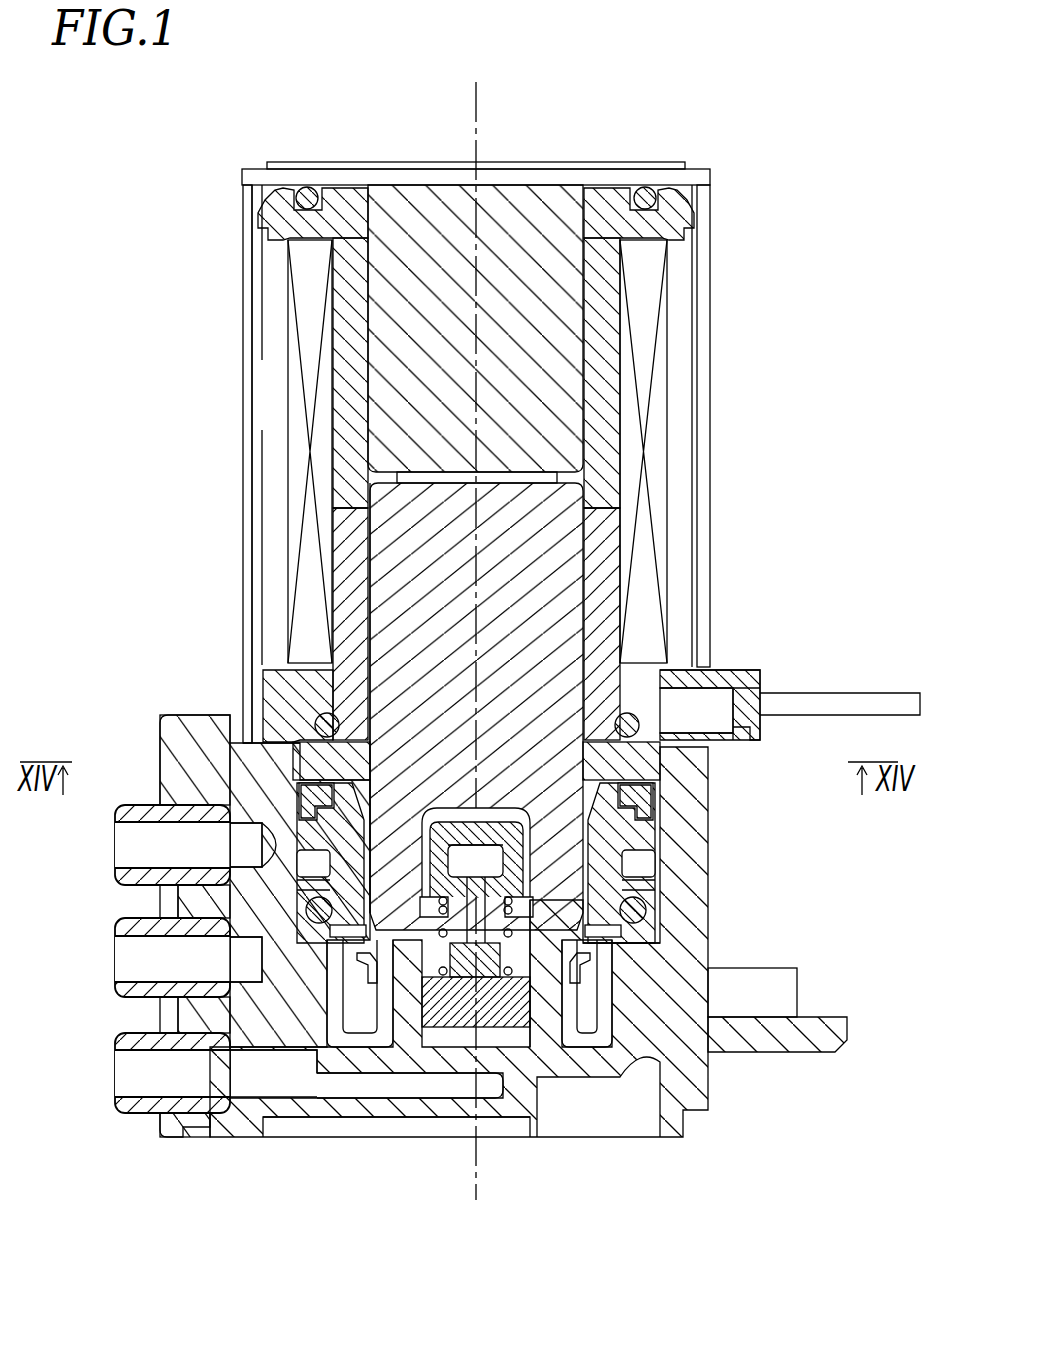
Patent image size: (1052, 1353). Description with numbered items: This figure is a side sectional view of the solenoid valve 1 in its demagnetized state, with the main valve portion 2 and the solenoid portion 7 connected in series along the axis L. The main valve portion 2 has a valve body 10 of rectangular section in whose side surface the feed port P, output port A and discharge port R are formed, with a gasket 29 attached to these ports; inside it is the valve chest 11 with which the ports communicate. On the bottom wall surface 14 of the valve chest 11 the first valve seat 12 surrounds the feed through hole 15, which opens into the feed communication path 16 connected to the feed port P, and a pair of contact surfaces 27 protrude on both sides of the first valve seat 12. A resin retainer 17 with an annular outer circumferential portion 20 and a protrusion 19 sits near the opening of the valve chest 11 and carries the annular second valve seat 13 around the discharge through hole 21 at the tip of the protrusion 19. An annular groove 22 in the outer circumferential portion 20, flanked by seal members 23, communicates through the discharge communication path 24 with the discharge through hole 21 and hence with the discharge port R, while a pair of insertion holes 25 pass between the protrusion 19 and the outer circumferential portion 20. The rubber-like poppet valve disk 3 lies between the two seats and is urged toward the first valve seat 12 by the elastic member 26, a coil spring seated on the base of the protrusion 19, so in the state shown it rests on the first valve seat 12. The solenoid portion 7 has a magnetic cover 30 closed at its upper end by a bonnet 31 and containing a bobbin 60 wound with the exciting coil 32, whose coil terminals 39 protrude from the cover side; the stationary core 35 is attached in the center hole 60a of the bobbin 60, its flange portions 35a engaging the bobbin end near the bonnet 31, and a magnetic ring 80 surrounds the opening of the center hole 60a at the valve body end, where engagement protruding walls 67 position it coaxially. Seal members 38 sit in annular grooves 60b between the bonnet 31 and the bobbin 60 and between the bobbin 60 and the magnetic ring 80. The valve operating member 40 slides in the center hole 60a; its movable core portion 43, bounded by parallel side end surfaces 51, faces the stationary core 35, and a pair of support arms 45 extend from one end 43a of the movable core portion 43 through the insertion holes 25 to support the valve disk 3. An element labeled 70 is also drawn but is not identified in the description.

The solenoid valve 1 is at (800, 102).
The main valve portion 2 is at (852, 945).
The valve disk 3 is at (550, 1050).
The solenoid portion 7 is at (775, 327).
The valve body 10 is at (812, 880).
The valve chest 11 is at (602, 1012).
The first valve seat 12 is at (520, 1030).
The second valve seat 13 is at (590, 944).
The bottom wall surface 14 is at (592, 1050).
The feed through hole 15 is at (447, 975).
The feed communication path 16 is at (340, 1070).
The retainer 17 is at (648, 806).
The protrusion 19 is at (660, 862).
The annular outer circumferential portion 20 is at (265, 812).
The discharge through hole 21 is at (452, 962).
The annular groove 22 is at (330, 870).
The seal members 23 is at (300, 800).
The discharge communication path 24 is at (445, 856).
The insertion holes 25 is at (392, 850).
The elastic member 26 is at (317, 1085).
The contact surfaces 27 is at (372, 1040).
The gasket 29 is at (138, 1105).
The magnetic cover 30 is at (702, 238).
The bonnet 31 is at (547, 168).
The exciting coil 32 is at (290, 396).
The stationary core 35 is at (416, 334).
The flange portions 35a is at (607, 205).
The seal members 38 is at (318, 196).
The coil terminals 39 is at (860, 700).
The valve operating member 40 is at (442, 558).
The movable core portion 43 is at (362, 572).
The one end 43a is at (509, 812).
The support arms 45 is at (330, 931).
The side end surfaces 51 is at (365, 520).
The bobbin 60 is at (328, 298).
The center hole 60a is at (378, 252).
The annular grooves 60b is at (306, 186).
The engagement protruding walls 67 is at (300, 752).
The cup 70 is at (356, 974).
The magnetic ring 80 is at (700, 688).
The discharge port R is at (255, 836).
The output port A is at (250, 968).
The feed port P is at (240, 1085).
The axis L is at (477, 625).